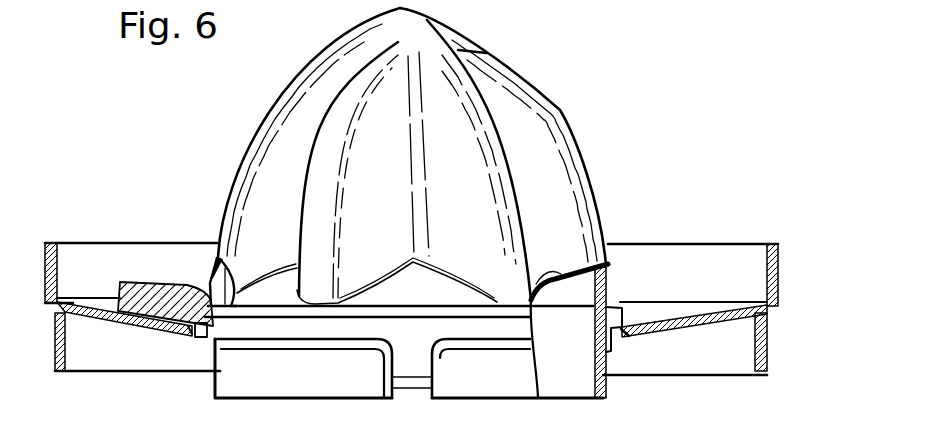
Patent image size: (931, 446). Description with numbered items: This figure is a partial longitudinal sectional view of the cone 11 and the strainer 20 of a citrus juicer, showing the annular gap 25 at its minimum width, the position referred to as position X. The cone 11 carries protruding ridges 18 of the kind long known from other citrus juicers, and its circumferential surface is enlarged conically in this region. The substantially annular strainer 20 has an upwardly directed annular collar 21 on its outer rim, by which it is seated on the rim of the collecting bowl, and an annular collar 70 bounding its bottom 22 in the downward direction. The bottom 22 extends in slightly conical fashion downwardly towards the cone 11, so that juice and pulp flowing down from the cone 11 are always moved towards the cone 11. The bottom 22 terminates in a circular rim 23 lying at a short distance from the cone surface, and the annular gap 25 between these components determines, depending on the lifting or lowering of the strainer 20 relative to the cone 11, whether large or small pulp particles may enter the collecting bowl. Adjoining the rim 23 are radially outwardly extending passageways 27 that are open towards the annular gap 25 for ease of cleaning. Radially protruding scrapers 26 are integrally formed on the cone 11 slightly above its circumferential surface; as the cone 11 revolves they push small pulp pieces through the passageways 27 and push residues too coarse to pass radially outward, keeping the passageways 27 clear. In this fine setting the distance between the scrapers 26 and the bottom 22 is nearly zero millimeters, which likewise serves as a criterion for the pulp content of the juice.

The cone 11 is at (552, 67).
The ridges 18 is at (337, 118).
The strainer 20 is at (786, 319).
The annular collar 21 is at (773, 244).
The bottom 22 is at (704, 330).
The circular rim 23 is at (203, 338).
The annular gap 25 is at (619, 338).
The scrapers 26 is at (140, 297).
The passageways 27 is at (195, 338).
The annular collar 70 is at (767, 358).